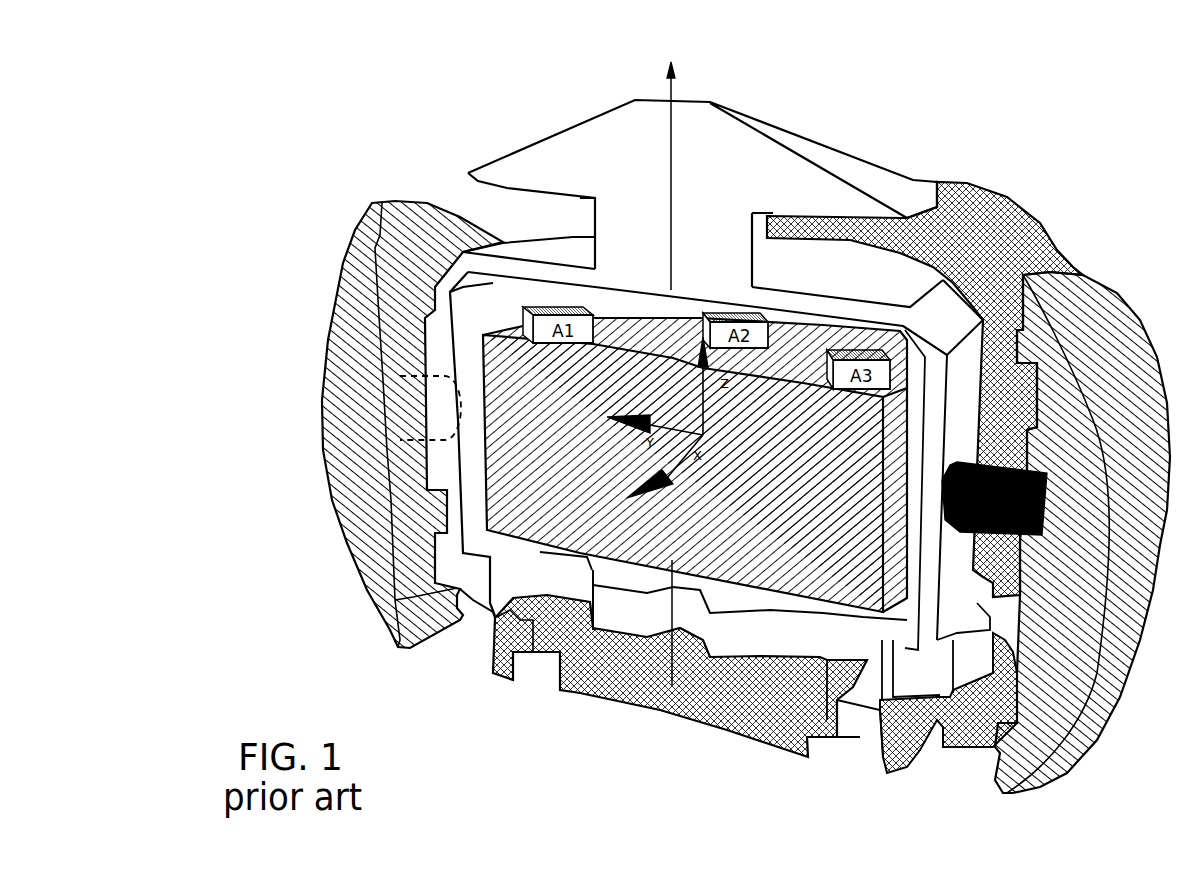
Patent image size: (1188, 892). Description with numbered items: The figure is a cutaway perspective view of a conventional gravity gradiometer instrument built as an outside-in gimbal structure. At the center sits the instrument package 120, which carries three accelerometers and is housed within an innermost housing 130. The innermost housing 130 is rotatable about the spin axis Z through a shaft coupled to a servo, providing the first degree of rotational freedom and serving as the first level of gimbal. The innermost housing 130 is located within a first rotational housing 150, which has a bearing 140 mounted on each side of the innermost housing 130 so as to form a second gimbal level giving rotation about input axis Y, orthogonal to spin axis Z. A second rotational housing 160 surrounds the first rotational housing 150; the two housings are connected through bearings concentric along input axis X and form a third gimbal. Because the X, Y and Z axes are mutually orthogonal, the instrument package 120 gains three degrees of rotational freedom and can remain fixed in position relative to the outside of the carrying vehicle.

The instrument package 120 is at (787, 562).
The innermost housing 130 is at (595, 180).
The bearing 140 is at (978, 463).
The first rotational housing 150 is at (398, 648).
The second rotational housing 160 is at (972, 212).